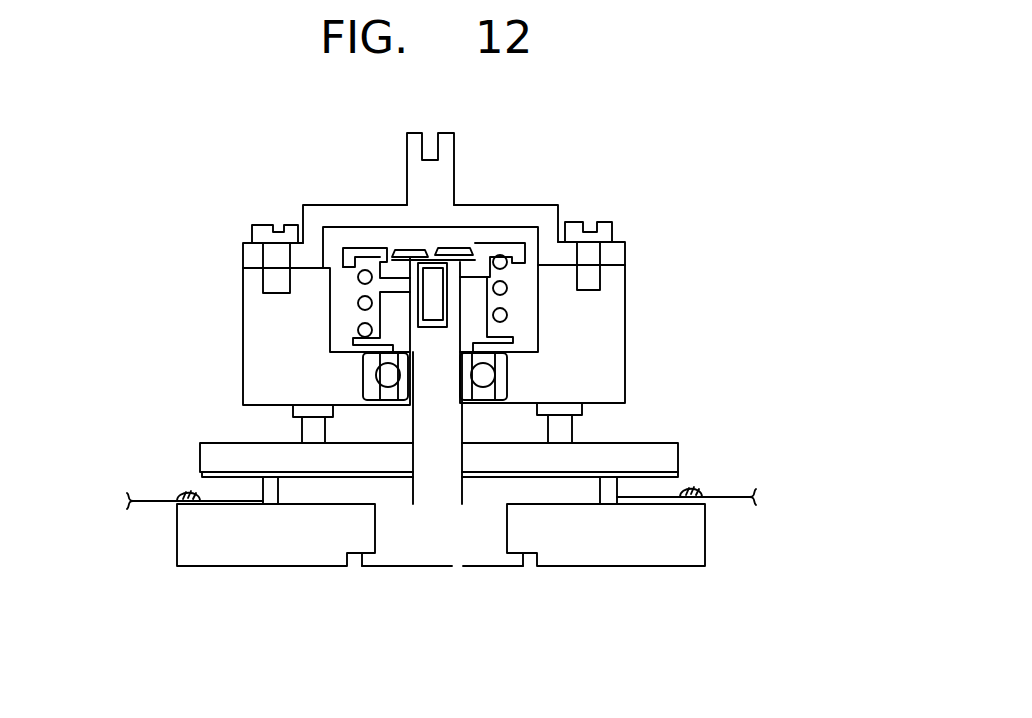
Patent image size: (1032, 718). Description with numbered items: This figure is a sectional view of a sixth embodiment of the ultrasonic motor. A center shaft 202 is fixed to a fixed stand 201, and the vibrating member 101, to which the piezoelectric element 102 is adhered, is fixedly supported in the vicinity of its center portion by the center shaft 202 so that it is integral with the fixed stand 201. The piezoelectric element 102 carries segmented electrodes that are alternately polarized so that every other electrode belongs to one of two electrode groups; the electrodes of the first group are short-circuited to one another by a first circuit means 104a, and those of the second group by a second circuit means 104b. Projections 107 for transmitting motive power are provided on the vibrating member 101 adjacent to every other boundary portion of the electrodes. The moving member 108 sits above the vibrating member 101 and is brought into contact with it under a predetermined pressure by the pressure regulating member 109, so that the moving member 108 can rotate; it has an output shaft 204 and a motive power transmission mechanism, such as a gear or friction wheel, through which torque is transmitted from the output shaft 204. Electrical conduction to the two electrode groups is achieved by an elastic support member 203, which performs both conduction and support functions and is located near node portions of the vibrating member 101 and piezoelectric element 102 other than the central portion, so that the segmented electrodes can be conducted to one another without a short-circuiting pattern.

The vibrating member 101 is at (210, 465).
The piezoelectric element 102 is at (677, 470).
The first circuit means 104a is at (153, 505).
The second circuit means 104b is at (727, 498).
The projections 107 is at (565, 433).
The moving member 108 is at (608, 326).
The pressure regulating member 109 is at (507, 288).
The fixed stand 201 is at (697, 547).
The center shaft 202 is at (417, 548).
The elastic support member 203 is at (270, 507).
The output shaft 204 is at (470, 158).